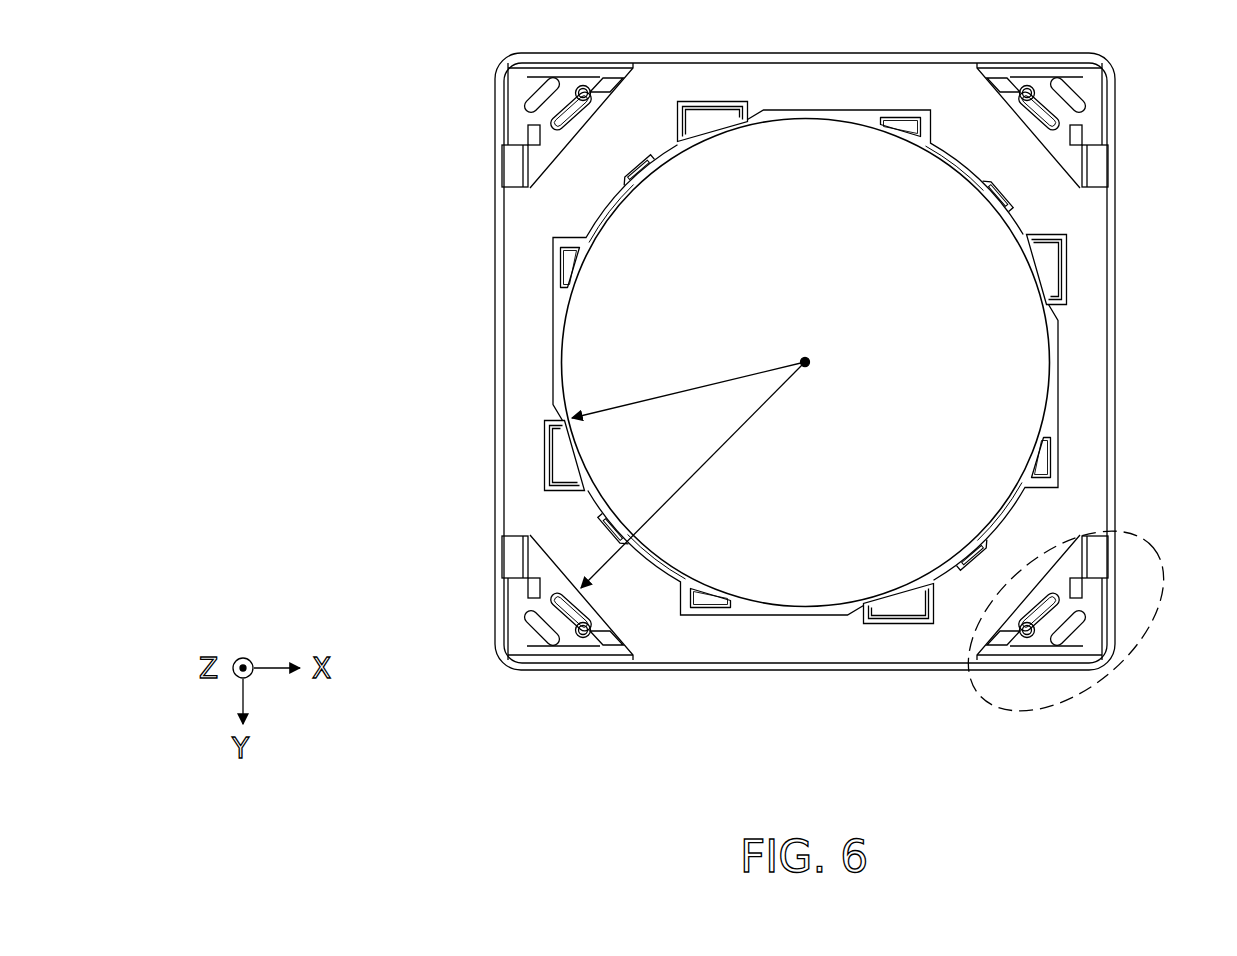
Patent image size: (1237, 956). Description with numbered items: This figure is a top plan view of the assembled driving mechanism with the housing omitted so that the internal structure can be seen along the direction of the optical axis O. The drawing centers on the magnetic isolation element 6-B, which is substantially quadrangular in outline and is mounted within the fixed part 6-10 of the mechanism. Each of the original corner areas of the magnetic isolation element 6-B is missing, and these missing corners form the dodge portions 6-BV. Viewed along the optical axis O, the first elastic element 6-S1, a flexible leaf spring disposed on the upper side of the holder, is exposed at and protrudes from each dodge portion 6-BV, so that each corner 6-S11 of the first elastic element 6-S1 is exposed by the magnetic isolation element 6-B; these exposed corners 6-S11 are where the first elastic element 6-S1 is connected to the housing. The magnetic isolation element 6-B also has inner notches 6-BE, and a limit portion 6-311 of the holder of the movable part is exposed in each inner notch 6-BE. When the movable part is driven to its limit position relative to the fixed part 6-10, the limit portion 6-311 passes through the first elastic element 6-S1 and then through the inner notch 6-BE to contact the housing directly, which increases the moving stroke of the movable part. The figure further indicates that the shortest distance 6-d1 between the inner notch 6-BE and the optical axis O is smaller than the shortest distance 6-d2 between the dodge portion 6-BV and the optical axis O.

The fixed part 6-10 is at (793, 383).
The magnetic isolation element 6-B is at (1083, 404).
The inner notch 6-BE is at (716, 112).
The dodge portion 6-BV is at (1020, 127).
The first elastic element 6-S1 is at (515, 133).
The corner 6-S11 is at (1106, 679).
The limit portion 6-311 is at (699, 122).
The optical axis O is at (821, 364).
The shortest distance 6-d1 is at (688, 385).
The shortest distance 6-d2 is at (693, 475).